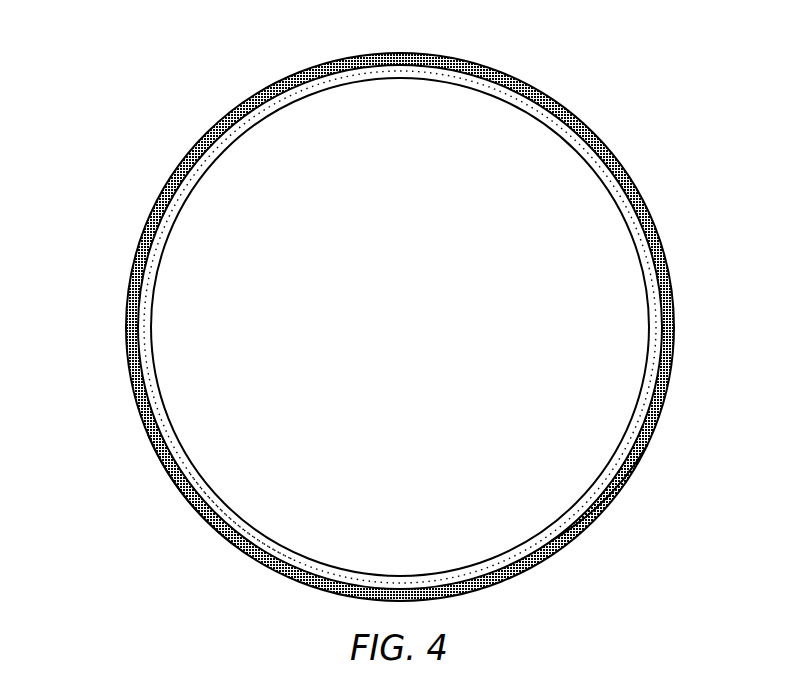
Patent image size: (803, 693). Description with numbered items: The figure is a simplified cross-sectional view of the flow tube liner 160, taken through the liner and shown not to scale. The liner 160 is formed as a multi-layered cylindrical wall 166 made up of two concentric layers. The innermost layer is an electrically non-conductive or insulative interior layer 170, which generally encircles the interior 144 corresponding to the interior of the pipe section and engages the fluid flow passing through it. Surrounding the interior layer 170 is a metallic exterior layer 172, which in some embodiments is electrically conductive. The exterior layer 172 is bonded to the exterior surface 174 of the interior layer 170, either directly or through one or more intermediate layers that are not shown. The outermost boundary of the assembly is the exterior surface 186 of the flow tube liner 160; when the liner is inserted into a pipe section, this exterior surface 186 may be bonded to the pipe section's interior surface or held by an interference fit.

The flow tube liner 160 is at (174, 77).
The multi-layered cylindrical wall 166 is at (605, 101).
The exterior surface of the interior layer 174 is at (671, 251).
The metallic exterior layer 172 is at (648, 445).
The electrically insulative interior layer 170 is at (220, 503).
The exterior surface of the flow tube liner 186 is at (131, 436).
The interior of the pipe section 144 is at (173, 307).